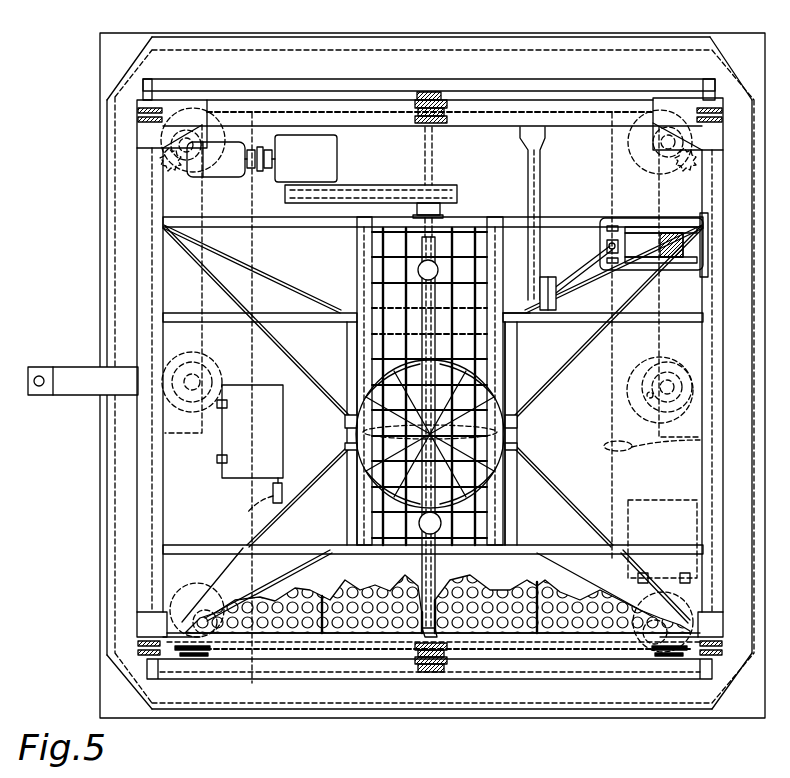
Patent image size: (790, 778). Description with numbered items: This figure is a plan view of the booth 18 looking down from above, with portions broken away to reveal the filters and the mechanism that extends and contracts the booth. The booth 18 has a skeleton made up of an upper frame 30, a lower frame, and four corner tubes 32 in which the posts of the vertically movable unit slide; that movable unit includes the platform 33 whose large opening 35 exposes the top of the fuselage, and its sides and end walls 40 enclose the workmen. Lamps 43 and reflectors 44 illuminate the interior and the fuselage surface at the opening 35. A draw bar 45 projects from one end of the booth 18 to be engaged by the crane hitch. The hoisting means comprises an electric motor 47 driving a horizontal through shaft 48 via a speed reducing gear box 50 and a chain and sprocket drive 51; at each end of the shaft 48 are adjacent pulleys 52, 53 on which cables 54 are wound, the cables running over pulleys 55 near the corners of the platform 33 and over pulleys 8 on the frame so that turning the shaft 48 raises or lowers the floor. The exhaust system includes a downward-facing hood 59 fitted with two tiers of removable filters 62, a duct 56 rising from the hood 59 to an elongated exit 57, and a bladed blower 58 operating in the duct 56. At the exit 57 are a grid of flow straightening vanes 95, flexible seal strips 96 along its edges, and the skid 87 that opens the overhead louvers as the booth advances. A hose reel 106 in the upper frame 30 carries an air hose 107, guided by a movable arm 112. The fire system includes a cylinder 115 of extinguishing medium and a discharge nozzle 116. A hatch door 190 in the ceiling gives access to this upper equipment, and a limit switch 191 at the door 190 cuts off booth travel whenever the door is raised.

The pulleys 8 is at (190, 660).
The booth 18 is at (367, 690).
The upper frame 30 is at (140, 205).
The corner posts or tubes 32 is at (712, 148).
The platform 33 is at (704, 440).
The opening 35 is at (622, 436).
The sides and end walls 40 is at (388, 33).
The lamps 43 is at (658, 366).
The reflectors 44 is at (632, 150).
The draw bar 45 is at (62, 398).
The electric motor 47 is at (226, 170).
The through shaft 48 is at (435, 176).
The speed reducing gear box 50 is at (322, 160).
The chain and sprocket drive 51 is at (386, 190).
The pulley 52 is at (458, 110).
The pulley 53 is at (420, 97).
The cables 54 is at (232, 662).
The pulleys 55 is at (172, 662).
The duct 56 is at (460, 372).
The exhaust exit 57 is at (380, 268).
The blower 58 is at (462, 400).
The hood 59 is at (322, 521).
The filters 62 is at (322, 596).
The cam or skid 87 is at (510, 455).
The flow straightening vanes 95 is at (362, 357).
The seal strips 96 is at (363, 243).
The hose reel 106 is at (685, 266).
The air hose 107 is at (640, 238).
The movable arm 112 is at (520, 322).
The cylinder 115 is at (212, 366).
The discharge nozzle 116 is at (556, 276).
The hatch door 190 is at (278, 440).
The limit switch 191 is at (283, 487).